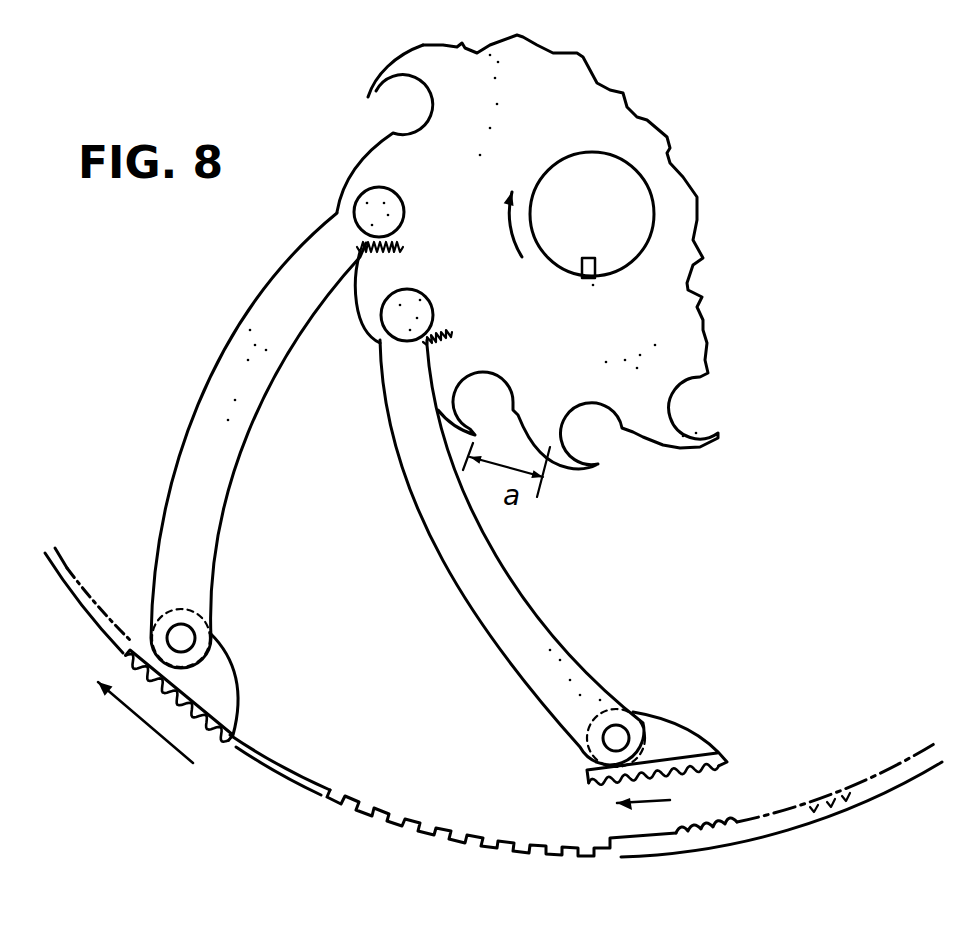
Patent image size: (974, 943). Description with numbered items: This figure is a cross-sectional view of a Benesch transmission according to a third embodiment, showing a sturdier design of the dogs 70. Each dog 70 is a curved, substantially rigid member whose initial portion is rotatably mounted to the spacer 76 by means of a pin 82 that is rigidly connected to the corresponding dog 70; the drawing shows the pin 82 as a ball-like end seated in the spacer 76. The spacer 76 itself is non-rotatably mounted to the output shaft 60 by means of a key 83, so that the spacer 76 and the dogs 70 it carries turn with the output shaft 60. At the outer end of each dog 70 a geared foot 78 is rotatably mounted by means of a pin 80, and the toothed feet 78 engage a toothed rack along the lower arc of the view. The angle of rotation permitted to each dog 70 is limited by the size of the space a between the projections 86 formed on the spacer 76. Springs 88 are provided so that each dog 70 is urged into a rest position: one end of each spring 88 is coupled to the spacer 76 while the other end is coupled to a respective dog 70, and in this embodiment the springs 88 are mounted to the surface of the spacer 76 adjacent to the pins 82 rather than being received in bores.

The output shaft 60 is at (603, 143).
The dog 70 is at (237, 358).
The spacer 76 is at (433, 172).
The geared foot 78 is at (215, 693).
The pin 80 is at (181, 638).
The pin 82 is at (352, 203).
The key 83 is at (590, 281).
The projection 86 is at (410, 58).
The spring 88 is at (403, 247).